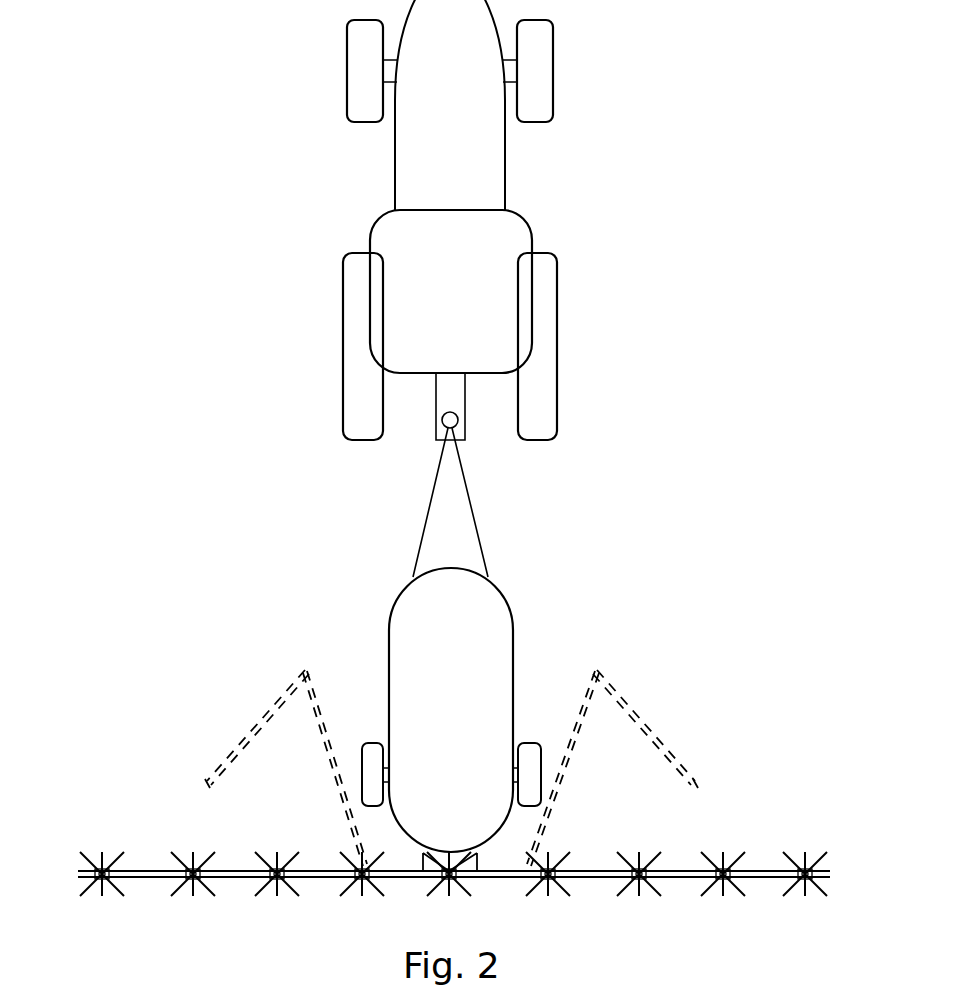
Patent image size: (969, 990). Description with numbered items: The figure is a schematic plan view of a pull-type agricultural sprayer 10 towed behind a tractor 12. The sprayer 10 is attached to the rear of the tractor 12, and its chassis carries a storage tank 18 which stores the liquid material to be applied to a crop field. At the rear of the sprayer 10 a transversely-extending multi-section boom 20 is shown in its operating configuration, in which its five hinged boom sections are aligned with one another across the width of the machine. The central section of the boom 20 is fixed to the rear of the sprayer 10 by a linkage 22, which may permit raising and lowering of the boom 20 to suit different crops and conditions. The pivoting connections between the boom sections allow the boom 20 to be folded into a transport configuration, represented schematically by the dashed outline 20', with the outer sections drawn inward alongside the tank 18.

The pull-type agricultural sprayer 10 is at (545, 607).
The tractor 12 is at (612, 93).
The storage tank 18 is at (462, 683).
The multi-section boom 20 is at (428, 843).
The transport configuration of the boom 20' is at (431, 768).
The linkage 22 is at (478, 862).